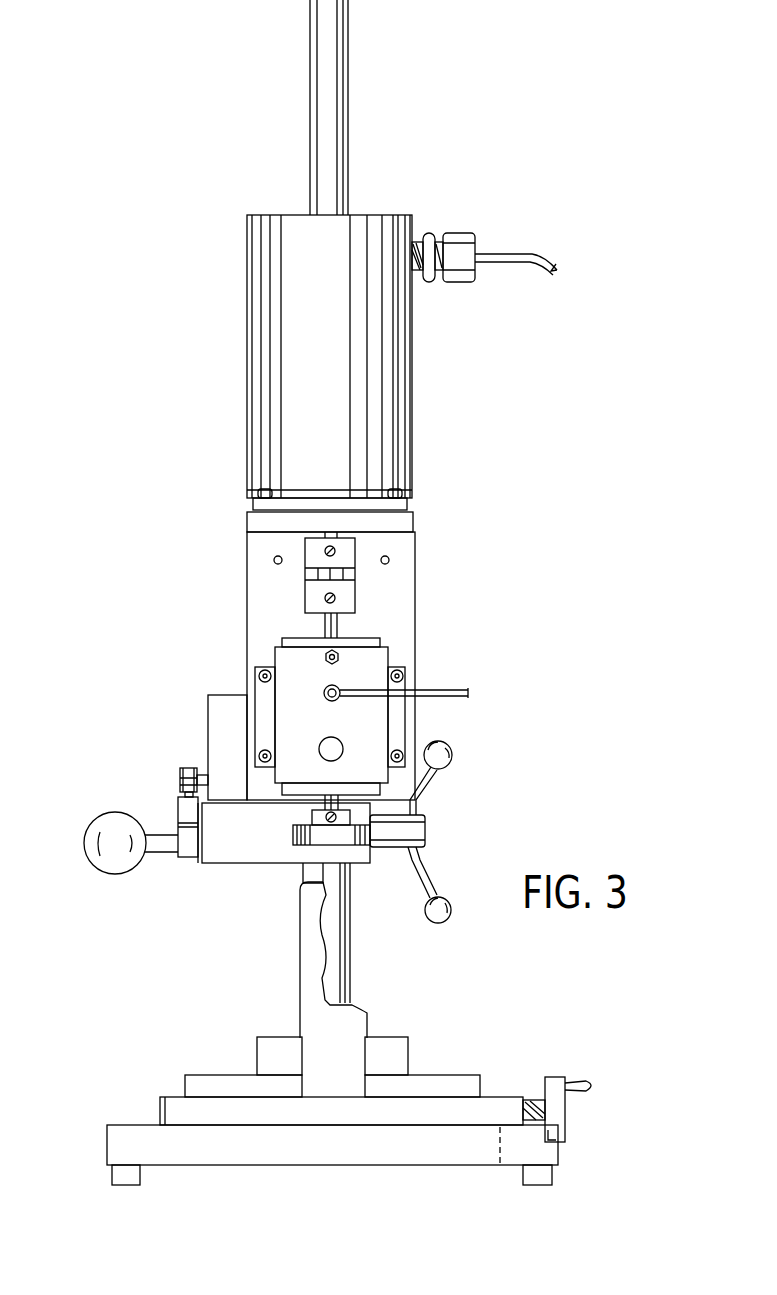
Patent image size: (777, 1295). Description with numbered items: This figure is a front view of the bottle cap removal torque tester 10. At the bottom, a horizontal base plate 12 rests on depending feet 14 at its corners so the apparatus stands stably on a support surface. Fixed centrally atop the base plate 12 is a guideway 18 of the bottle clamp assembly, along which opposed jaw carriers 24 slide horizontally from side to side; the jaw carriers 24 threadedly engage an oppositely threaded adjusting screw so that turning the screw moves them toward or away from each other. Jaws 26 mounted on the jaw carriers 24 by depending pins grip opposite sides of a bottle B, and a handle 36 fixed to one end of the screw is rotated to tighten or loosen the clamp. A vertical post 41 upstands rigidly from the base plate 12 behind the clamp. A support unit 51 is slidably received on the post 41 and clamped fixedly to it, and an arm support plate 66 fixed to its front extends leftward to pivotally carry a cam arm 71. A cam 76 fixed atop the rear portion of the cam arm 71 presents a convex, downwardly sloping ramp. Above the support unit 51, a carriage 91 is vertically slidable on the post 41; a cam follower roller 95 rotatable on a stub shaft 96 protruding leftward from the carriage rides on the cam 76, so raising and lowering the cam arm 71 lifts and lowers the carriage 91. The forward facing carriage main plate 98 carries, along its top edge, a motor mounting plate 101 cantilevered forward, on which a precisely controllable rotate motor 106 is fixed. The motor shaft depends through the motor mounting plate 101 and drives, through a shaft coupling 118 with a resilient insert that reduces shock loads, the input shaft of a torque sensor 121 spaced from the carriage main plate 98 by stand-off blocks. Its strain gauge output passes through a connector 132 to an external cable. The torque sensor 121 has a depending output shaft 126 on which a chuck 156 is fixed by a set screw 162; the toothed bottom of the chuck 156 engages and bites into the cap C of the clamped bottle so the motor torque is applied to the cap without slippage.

The bottle cap removal torque tester 10 is at (518, 130).
The base plate 12 is at (120, 1150).
The feet 14 is at (120, 1177).
The guideway 18 is at (165, 1105).
The jaw carriers 24 is at (232, 1082).
The jaws 26 is at (392, 1050).
The handle 36 is at (556, 1082).
The post 41 is at (324, 33).
The support unit 51 is at (206, 866).
The arm support plate 66 is at (236, 856).
The cam arm 71 is at (183, 852).
The cam 76 is at (180, 812).
The carriage 91 is at (417, 548).
The cam follower roller 95 is at (185, 775).
The stub shaft 96 is at (205, 778).
The carriage main plate 98 is at (403, 572).
The motor mounting plate 101 is at (412, 522).
The rotate motor 106 is at (416, 404).
The shaft coupling 118 is at (301, 588).
The torque sensor 121 is at (391, 652).
The output shaft 126 is at (412, 792).
The connector 132 is at (341, 690).
The chuck 156 is at (291, 836).
The set screw 162 is at (328, 815).
The column B is at (306, 932).
The caps C is at (305, 870).